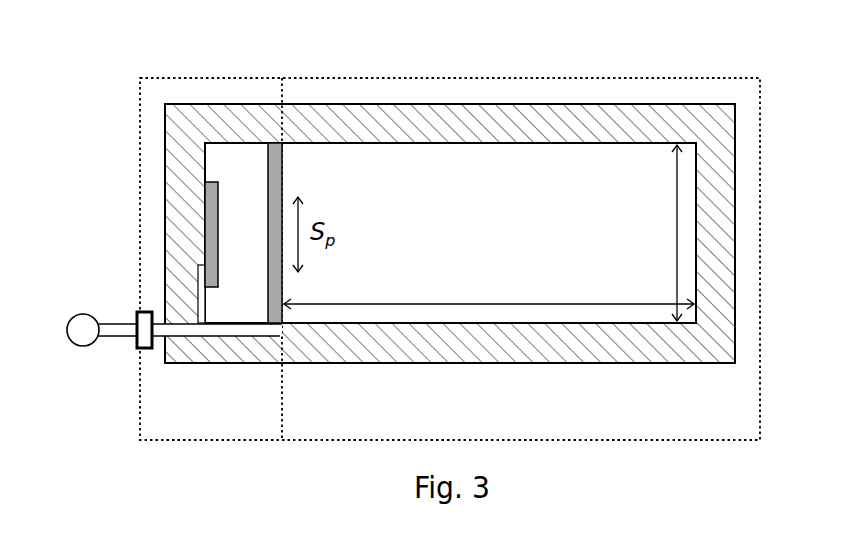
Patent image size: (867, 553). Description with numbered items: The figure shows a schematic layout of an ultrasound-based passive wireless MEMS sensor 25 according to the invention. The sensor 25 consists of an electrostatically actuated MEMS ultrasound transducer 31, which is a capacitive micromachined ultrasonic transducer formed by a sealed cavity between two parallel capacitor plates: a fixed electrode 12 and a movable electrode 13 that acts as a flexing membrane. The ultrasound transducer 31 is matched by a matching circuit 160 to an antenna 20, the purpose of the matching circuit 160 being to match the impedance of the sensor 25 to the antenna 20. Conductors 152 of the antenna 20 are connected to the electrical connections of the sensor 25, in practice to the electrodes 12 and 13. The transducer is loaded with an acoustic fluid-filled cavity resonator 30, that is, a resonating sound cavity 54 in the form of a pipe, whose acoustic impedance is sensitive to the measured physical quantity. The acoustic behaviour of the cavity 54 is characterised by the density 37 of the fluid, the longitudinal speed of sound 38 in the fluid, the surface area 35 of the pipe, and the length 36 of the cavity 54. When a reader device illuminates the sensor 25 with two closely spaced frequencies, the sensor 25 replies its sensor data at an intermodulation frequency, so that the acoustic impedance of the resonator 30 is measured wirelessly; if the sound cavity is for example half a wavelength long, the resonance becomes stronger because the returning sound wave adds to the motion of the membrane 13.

The sensor structure 25 is at (137, 62).
The acoustic fluid-filled cavity resonator 30 is at (752, 420).
The ultrasound transducer 31 is at (258, 441).
The fixed electrode 12 is at (255, 251).
The movable electrode 13 is at (281, 160).
The antenna 20 is at (124, 318).
The conductors of the antenna 152 is at (163, 337).
The matching circuit 160 is at (138, 312).
The surface area of the cavity 35 is at (632, 251).
The length of the cavity 36 is at (526, 299).
The density of the fluid 37 is at (459, 246).
The speed of sound 38 is at (459, 206).
The resonating sound cavity 54 is at (548, 257).